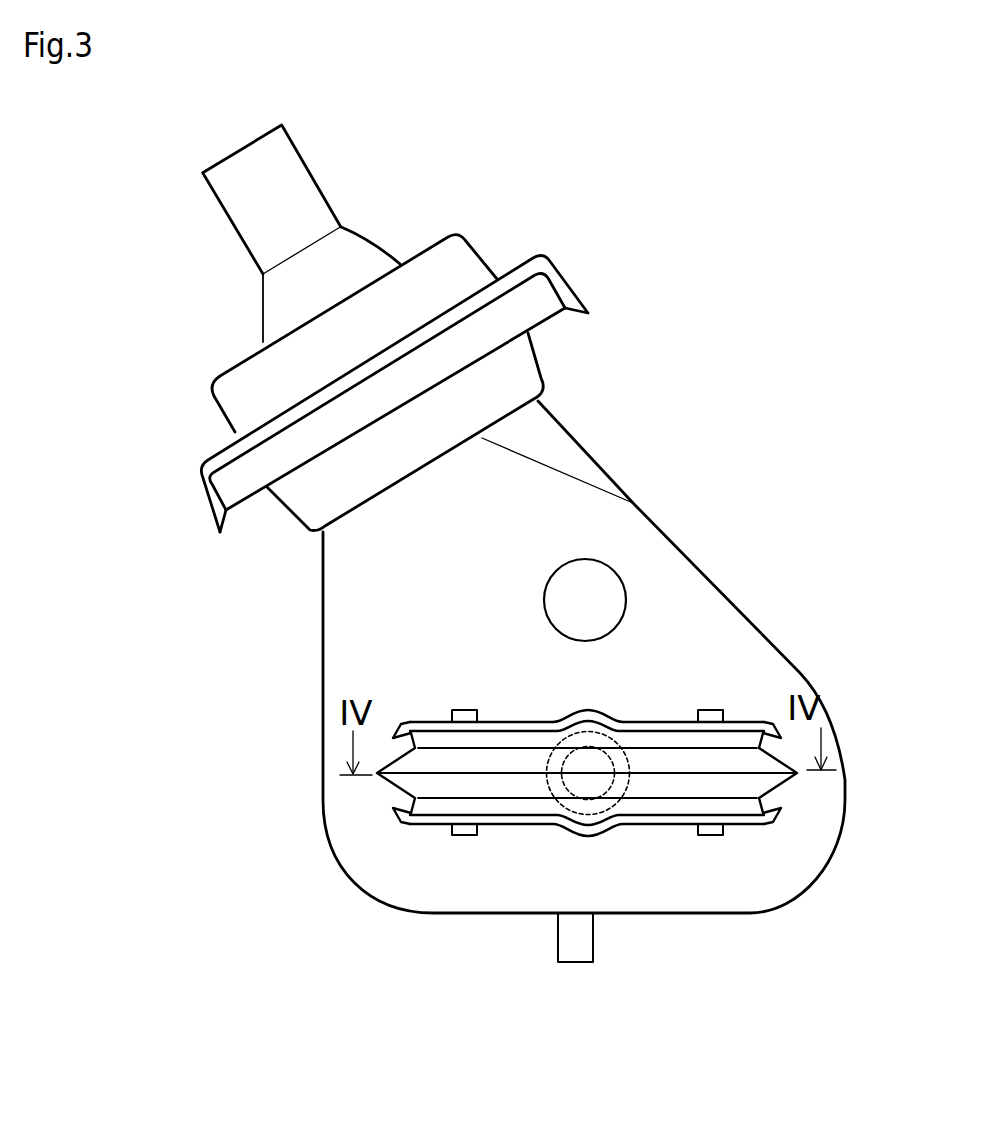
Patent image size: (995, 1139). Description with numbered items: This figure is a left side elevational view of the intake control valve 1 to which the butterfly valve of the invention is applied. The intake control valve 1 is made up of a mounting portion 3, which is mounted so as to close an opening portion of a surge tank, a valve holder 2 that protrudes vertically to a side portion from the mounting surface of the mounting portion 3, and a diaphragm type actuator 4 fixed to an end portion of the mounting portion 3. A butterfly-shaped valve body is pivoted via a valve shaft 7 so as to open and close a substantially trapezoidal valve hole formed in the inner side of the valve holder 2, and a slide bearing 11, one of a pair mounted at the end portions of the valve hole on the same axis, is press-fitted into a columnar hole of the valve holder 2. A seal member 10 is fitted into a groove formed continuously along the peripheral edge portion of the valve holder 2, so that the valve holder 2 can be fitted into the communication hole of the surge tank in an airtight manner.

The intake control valve 1 is at (765, 588).
The valve holder 2 is at (667, 718).
The mounting portion 3 is at (677, 535).
The diaphragm type actuator 4 is at (568, 282).
The valve shaft 7 is at (605, 748).
The seal member 10 is at (420, 787).
The slide bearing 11 is at (575, 733).